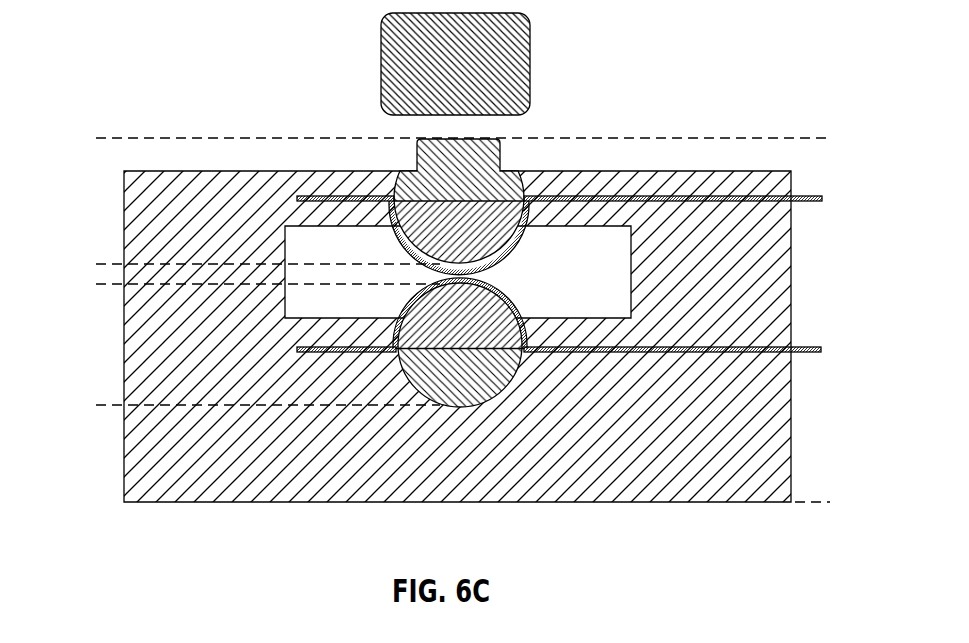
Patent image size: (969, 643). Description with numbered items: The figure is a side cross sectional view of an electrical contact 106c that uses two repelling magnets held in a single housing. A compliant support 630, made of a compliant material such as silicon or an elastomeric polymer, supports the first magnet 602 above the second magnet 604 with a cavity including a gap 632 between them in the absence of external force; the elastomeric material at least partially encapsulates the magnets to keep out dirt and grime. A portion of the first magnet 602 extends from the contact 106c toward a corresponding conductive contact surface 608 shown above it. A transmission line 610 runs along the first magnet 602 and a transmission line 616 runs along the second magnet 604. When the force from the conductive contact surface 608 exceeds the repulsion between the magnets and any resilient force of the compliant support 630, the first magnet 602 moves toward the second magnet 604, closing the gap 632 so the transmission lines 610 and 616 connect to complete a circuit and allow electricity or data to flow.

The first magnet 602 is at (96, 138).
The second magnet 604 is at (96, 284).
The conductive contact surface 608 is at (530, 66).
The transmission line 610 is at (817, 194).
The transmission line 616 is at (802, 347).
The compliant support 630 is at (299, 467).
The gap 632 is at (510, 271).
The electrical contact 106c is at (830, 138).